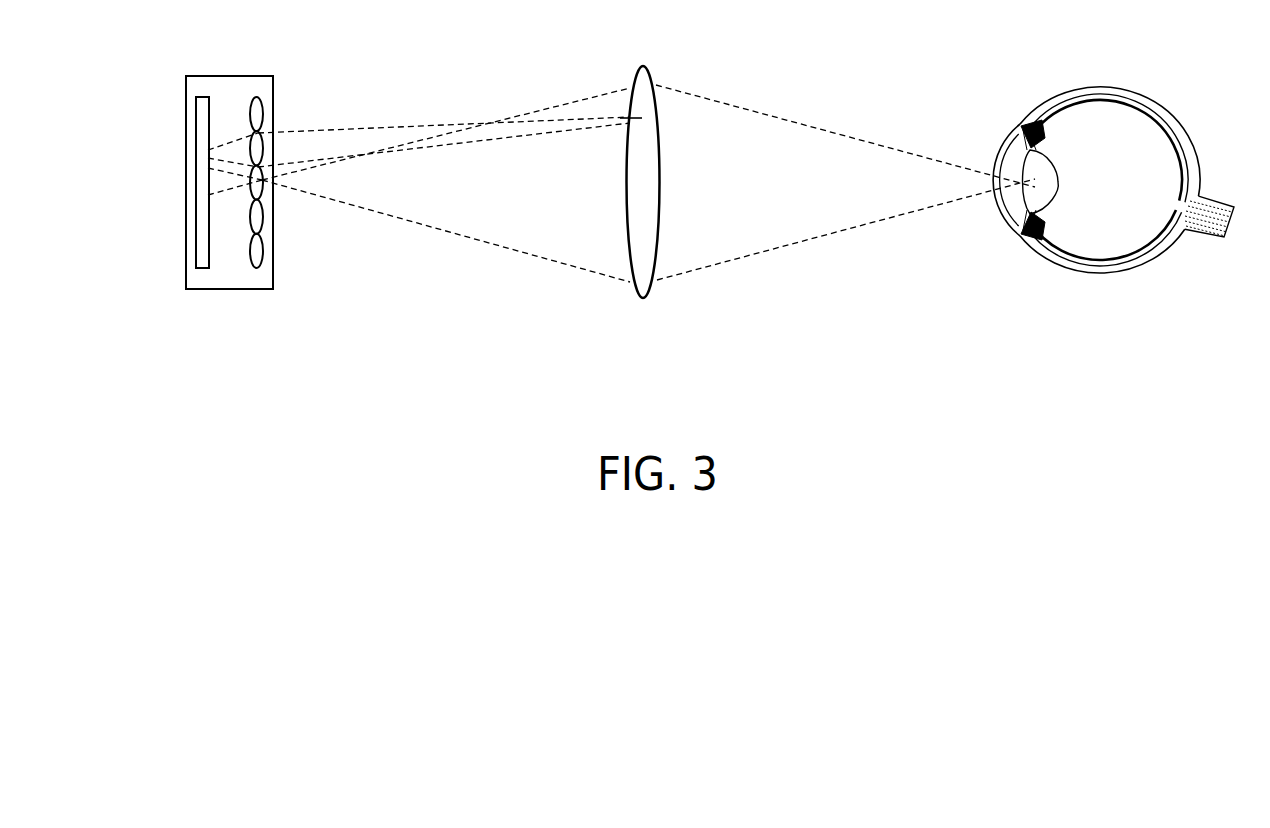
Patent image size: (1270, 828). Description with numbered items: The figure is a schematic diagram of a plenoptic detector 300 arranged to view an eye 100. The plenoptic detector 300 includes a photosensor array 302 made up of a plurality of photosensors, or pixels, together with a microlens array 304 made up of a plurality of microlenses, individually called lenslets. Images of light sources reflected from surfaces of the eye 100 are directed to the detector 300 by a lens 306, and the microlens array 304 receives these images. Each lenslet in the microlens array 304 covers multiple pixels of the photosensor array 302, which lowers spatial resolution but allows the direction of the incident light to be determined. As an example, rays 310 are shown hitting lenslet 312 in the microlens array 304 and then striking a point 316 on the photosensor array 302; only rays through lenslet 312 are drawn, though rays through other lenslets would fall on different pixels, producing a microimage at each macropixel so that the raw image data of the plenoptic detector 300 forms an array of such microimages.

The eye 100 is at (1103, 309).
The plenoptic detector 300 is at (217, 290).
The photosensor array 302 is at (193, 258).
The microlens array 304 is at (263, 257).
The lens 306 is at (643, 298).
The rays 310 is at (363, 129).
The lenslet 312 is at (250, 147).
The point on photosensor array 316 is at (191, 157).